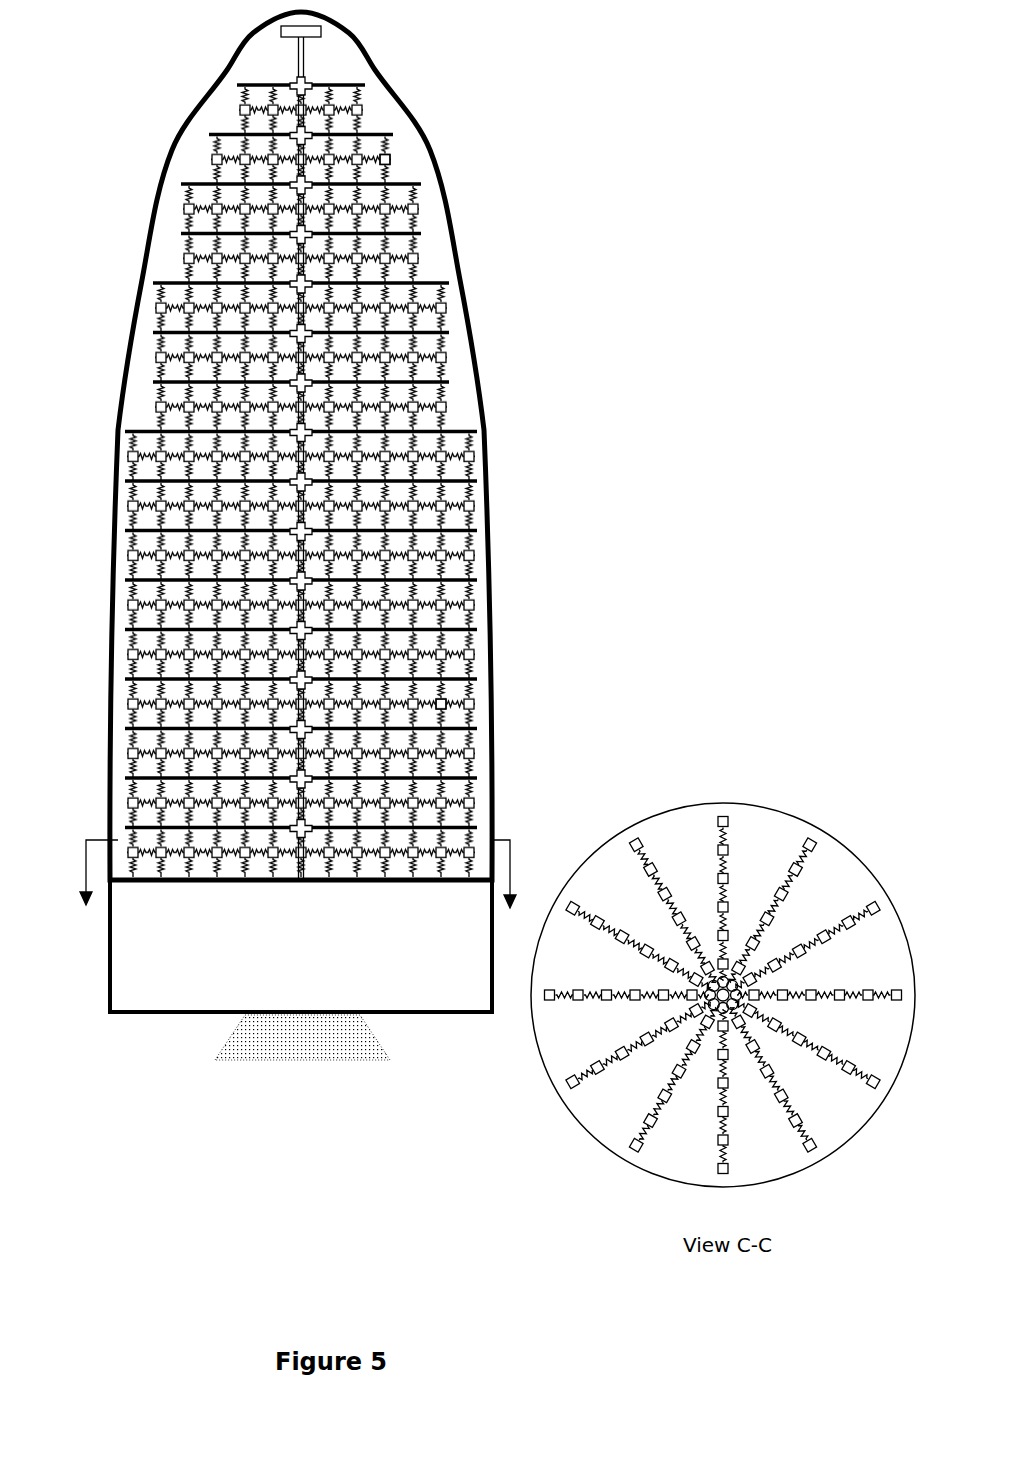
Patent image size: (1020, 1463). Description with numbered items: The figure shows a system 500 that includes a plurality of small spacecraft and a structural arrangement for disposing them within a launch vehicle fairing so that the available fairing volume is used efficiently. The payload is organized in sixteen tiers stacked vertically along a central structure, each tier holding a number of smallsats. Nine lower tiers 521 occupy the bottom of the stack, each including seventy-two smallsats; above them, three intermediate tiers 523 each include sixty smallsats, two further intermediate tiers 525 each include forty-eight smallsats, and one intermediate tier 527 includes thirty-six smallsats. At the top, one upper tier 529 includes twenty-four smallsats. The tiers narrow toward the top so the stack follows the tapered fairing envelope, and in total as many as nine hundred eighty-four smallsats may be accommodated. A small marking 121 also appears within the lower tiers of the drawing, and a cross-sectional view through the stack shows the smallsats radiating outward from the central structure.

The structure with distributed mass-spring network 500 is at (170, 18).
The lower tiers 521 is at (60, 850).
The intermediate tiers 523 is at (90, 403).
The intermediate tiers 525 is at (117, 255).
The intermediate tier 527 is at (136, 157).
The upper tier 529 is at (163, 108).
The mass element 121 is at (459, 697).